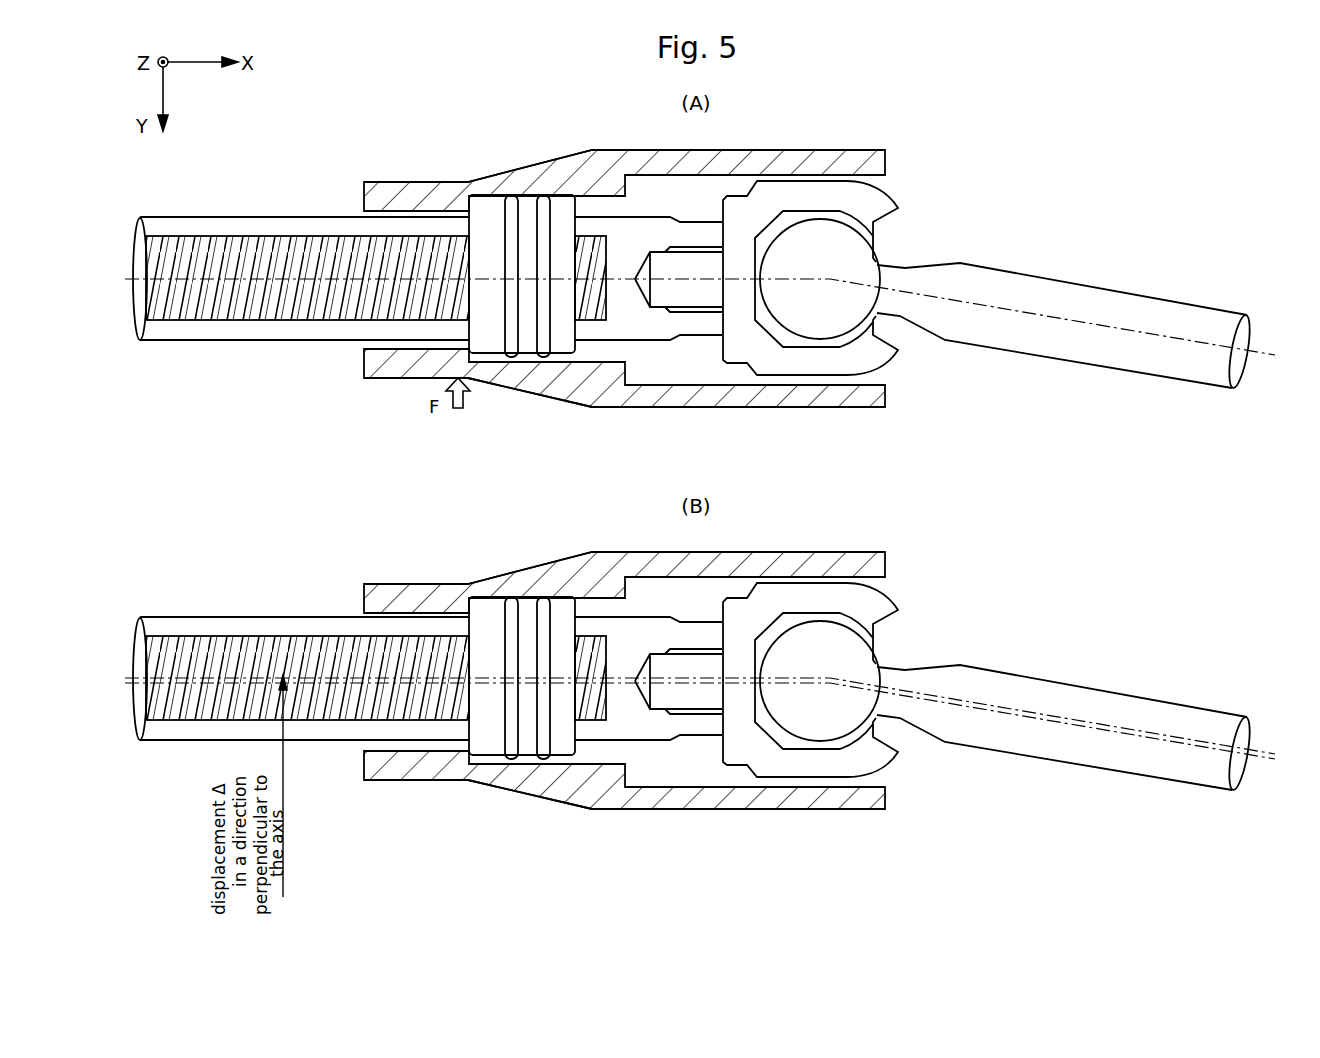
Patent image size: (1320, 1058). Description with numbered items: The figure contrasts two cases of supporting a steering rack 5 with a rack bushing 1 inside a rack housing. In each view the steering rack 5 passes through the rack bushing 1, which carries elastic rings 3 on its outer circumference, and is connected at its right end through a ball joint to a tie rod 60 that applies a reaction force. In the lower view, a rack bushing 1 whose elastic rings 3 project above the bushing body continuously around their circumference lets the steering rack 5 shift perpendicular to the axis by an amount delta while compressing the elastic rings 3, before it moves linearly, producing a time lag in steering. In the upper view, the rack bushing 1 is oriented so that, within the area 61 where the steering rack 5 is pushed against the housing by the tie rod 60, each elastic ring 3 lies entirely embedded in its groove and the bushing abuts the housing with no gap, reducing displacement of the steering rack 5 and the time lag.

The rack bushing 1 is at (472, 184).
The elastic ring 3 is at (511, 357).
The steering rack 5 is at (243, 341).
The tie rod 60 is at (1080, 364).
The place in which the steering rack is pushed against the rack housing 61 is at (575, 176).